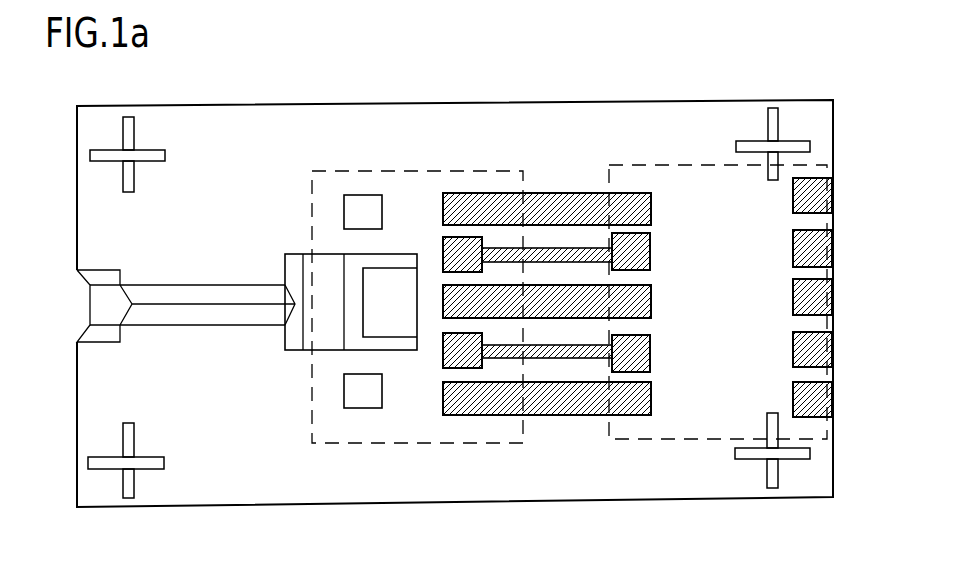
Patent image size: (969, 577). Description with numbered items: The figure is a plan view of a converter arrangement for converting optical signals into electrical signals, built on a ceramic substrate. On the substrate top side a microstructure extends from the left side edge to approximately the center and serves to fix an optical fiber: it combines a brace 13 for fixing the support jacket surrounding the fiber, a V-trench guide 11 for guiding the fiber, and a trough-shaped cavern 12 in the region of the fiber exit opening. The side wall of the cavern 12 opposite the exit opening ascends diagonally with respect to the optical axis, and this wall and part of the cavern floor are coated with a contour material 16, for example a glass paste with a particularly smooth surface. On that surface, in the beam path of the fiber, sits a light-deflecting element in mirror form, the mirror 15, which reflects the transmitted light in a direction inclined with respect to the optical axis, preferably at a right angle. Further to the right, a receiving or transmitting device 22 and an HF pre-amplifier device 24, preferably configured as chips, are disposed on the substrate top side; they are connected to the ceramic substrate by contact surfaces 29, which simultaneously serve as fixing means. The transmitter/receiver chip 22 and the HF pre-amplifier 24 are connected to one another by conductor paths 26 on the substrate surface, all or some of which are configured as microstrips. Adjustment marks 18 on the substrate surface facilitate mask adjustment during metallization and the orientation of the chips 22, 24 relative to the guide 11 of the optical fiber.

The guide 11 is at (140, 315).
The cavern 12 is at (328, 335).
The brace 13 is at (95, 317).
The light-deflecting element 15 is at (375, 299).
The contour material 16 is at (391, 256).
The adjustment marks 18 is at (131, 145).
The receiving or transmitting device 22 is at (470, 171).
The HF pre-amplifier device 24 is at (672, 166).
The conductor paths 26 is at (580, 196).
The contact surfaces 29 is at (350, 203).